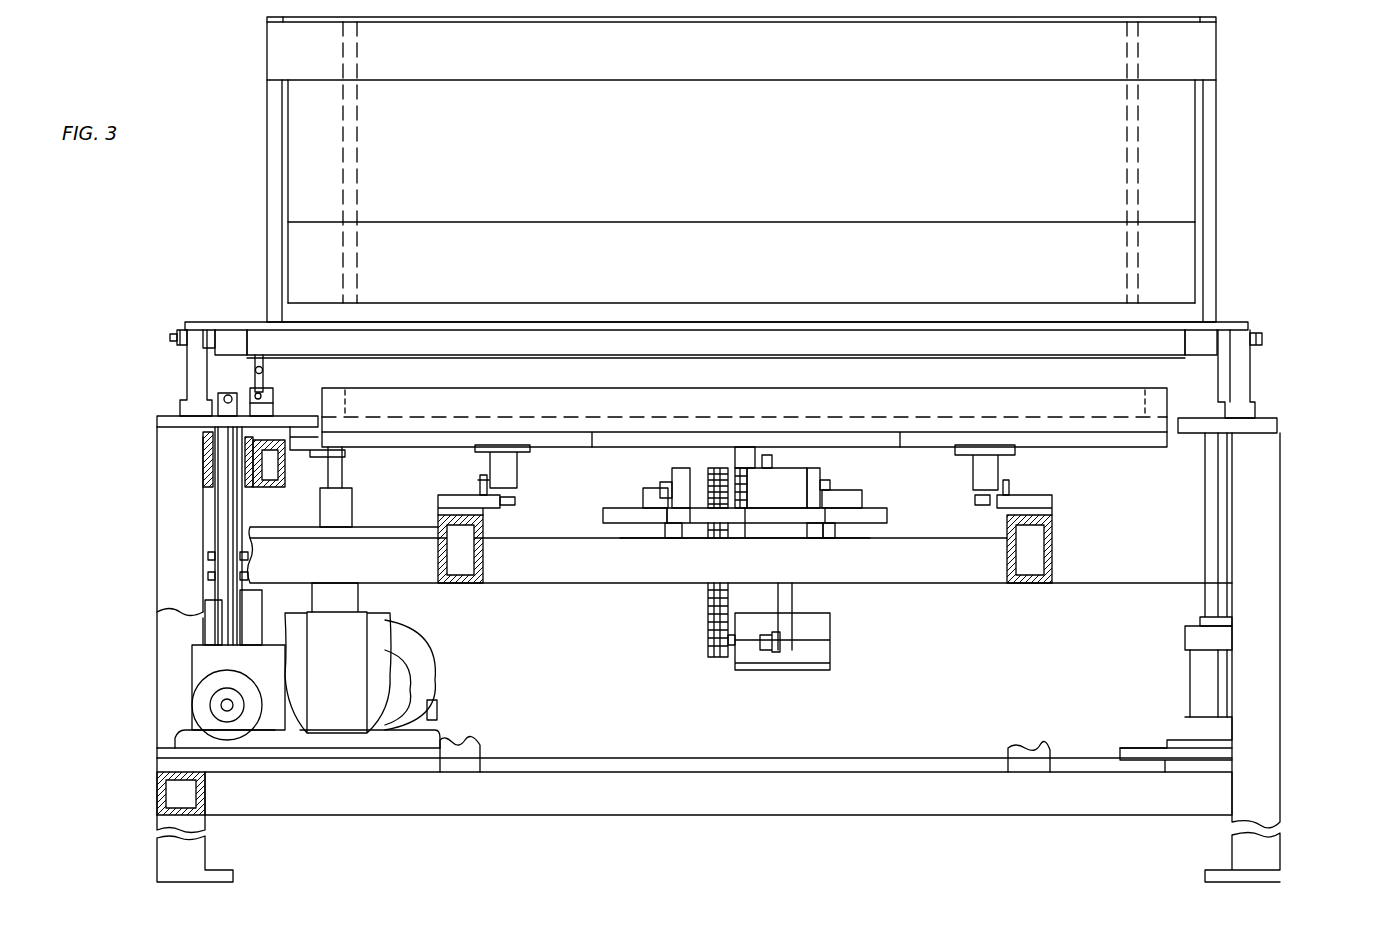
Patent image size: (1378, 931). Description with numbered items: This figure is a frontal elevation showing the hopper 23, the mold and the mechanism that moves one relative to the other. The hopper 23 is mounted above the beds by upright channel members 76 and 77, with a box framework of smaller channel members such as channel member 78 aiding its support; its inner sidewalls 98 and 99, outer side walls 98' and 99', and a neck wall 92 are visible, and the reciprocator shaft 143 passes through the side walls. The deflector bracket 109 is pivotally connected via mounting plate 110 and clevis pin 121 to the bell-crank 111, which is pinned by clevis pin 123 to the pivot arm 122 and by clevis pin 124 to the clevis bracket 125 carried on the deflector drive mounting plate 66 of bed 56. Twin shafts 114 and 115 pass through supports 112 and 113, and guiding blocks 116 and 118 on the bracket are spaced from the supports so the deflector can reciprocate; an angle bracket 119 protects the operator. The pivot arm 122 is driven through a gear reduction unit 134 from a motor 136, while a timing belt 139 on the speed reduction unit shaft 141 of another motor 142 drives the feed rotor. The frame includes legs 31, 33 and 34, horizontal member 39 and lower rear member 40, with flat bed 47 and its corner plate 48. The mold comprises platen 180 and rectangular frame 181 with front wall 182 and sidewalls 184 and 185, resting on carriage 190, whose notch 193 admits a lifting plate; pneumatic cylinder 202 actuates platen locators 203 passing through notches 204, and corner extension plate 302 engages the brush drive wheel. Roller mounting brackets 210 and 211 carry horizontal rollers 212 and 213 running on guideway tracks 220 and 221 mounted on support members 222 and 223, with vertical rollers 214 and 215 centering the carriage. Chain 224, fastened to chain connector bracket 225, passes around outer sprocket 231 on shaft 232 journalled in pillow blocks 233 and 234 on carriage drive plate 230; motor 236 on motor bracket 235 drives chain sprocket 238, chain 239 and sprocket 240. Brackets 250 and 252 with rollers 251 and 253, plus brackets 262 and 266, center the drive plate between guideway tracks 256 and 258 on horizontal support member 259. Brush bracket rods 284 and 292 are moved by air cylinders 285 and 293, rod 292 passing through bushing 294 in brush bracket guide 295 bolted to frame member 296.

The hopper 23 is at (741, 169).
The channel member 78 is at (630, 30).
The upright channel member 76 is at (268, 173).
The upright channel member 77 is at (1218, 157).
The hopper outer side wall 99' is at (313, 162).
The hopper inner sidewall 99 is at (377, 162).
The hopper inner sidewall 98 is at (1105, 162).
The hopper outer side wall 98' is at (1167, 162).
The hopper wall 92 is at (662, 302).
The mounting plate 110 is at (290, 343).
The deflector bracket 109 is at (365, 353).
The support 113 is at (190, 366).
The shaft 115 is at (183, 330).
The shaft 114 is at (178, 343).
The angle bracket 119 is at (215, 330).
The guiding block 116 is at (230, 345).
The clevis pin 121 is at (257, 357).
The bell-crank 111 is at (265, 372).
The clevis pin 123 is at (228, 395).
The clevis pin 124 is at (270, 392).
The clevis bracket 125 is at (270, 407).
The bed 56 is at (150, 412).
The deflector drive mounting plate 66 is at (165, 425).
The corner extension plate 302 is at (317, 450).
The platen 180 is at (465, 410).
The notch 193 is at (715, 440).
The sidewall 184 is at (348, 405).
The sidewall 185 is at (1114, 403).
The front wall 182 is at (828, 389).
The rectangular frame 181 is at (1030, 390).
The carriage 190 is at (1090, 446).
The guiding block 118 is at (1205, 333).
The support 112 is at (1248, 378).
The flat bed 47 is at (1289, 410).
The corner plate 48 is at (1278, 425).
The left front leg 33 is at (165, 480).
The left rear leg 34 is at (160, 712).
The bushing 294 is at (207, 446).
The brush bracket guide 295 is at (248, 470).
The frame member 296 is at (265, 488).
The pivot arm 122 is at (225, 519).
The timing belt 139 is at (218, 535).
The adjustable brush bracket rod 292 is at (212, 498).
The air cylinder 293 is at (262, 608).
The reciprocator shaft 143 is at (205, 665).
The gear reduction unit 134 is at (228, 738).
The motor 136 is at (385, 640).
The motor 142 is at (420, 660).
The speed reduction unit shaft 141 is at (437, 704).
The lower rear member 40 is at (470, 812).
The horizontal member 39 is at (165, 796).
The right front leg 31 is at (1275, 521).
The adjustable brush bracket rod 284 is at (1205, 541).
The air cylinder 285 is at (1195, 695).
The horizontal support member 259 is at (585, 585).
The pneumatic cylinder 202 is at (370, 535).
The platen locator 203 is at (342, 489).
The notch 204 is at (345, 450).
The support member 222 is at (438, 556).
The support member 223 is at (1052, 563).
The carriage guideway track 220 is at (438, 503).
The roller mounting bracket 210 is at (517, 466).
The carriage roller 212 is at (482, 484).
The carriage roller 214 is at (515, 496).
The roller mounting bracket 211 is at (1000, 465).
The carriage roller 213 is at (1010, 486).
The carriage roller 215 is at (995, 505).
The carriage guideway track 221 is at (1045, 503).
The chain connector bracket 225 is at (748, 445).
The pillow block 233 is at (688, 475).
The sprocket 240 is at (672, 490).
The chain 224 is at (722, 470).
The outer sprocket 231 is at (777, 488).
The pillow block 234 is at (813, 470).
The shaft 232 is at (828, 486).
The bracket 266 is at (862, 503).
The bracket 262 is at (648, 498).
The guideway track 256 is at (603, 520).
The guideway track 258 is at (888, 522).
The roller 251 is at (668, 530).
The roller mounting bracket 250 is at (680, 530).
The roller mounting bracket 252 is at (810, 530).
The roller 253 is at (826, 530).
The carriage drive plate 230 is at (745, 523).
The chain 239 is at (706, 607).
The chain sprocket 238 is at (707, 632).
The motor bracket 235 is at (790, 612).
The motor 236 is at (830, 647).